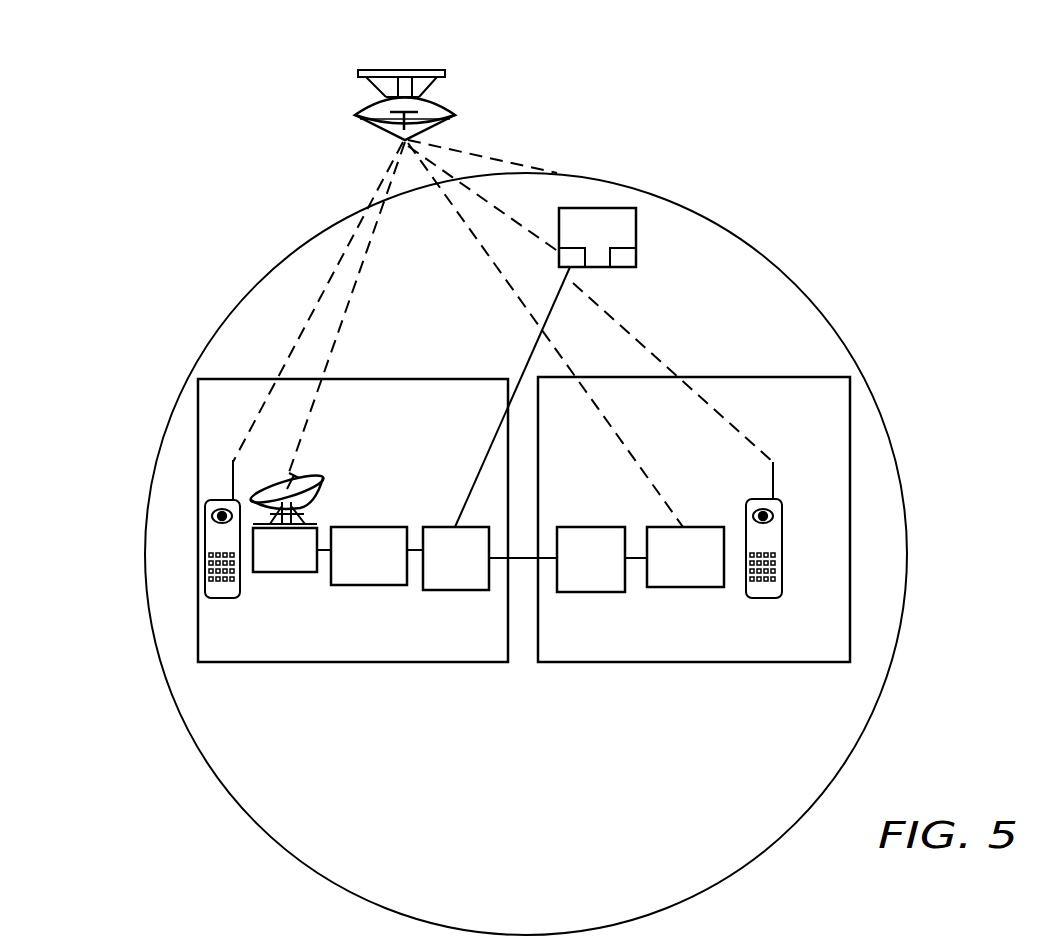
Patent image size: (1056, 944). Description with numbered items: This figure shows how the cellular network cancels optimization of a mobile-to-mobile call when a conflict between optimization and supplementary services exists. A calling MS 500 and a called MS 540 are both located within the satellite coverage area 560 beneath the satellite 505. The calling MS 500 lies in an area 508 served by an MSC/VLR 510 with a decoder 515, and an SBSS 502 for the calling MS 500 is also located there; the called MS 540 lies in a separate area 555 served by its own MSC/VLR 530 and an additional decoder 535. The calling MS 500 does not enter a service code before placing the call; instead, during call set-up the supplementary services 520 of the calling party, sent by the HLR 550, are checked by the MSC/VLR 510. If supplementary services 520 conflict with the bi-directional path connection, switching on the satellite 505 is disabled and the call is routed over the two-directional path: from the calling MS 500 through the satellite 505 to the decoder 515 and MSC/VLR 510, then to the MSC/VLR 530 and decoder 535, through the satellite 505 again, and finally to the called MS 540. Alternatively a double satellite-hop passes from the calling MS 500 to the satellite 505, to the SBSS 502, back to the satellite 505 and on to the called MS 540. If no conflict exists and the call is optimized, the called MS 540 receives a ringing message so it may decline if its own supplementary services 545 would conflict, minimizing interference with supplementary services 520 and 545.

The satellite 505 is at (451, 104).
The calling MS 500 is at (240, 592).
The SBSS 502 is at (265, 572).
The area 508 is at (258, 659).
The MSC/VLR 510 is at (442, 590).
The decoder 515 is at (350, 585).
The supplementary services 520 is at (559, 250).
The MSC/VLR 530 is at (572, 592).
The decoder 535 is at (688, 587).
The called MS 540 is at (746, 594).
The supplementary services 545 is at (622, 268).
The HLR 550 is at (636, 222).
The area 555 is at (841, 659).
The satellite coverage area 560 is at (526, 554).